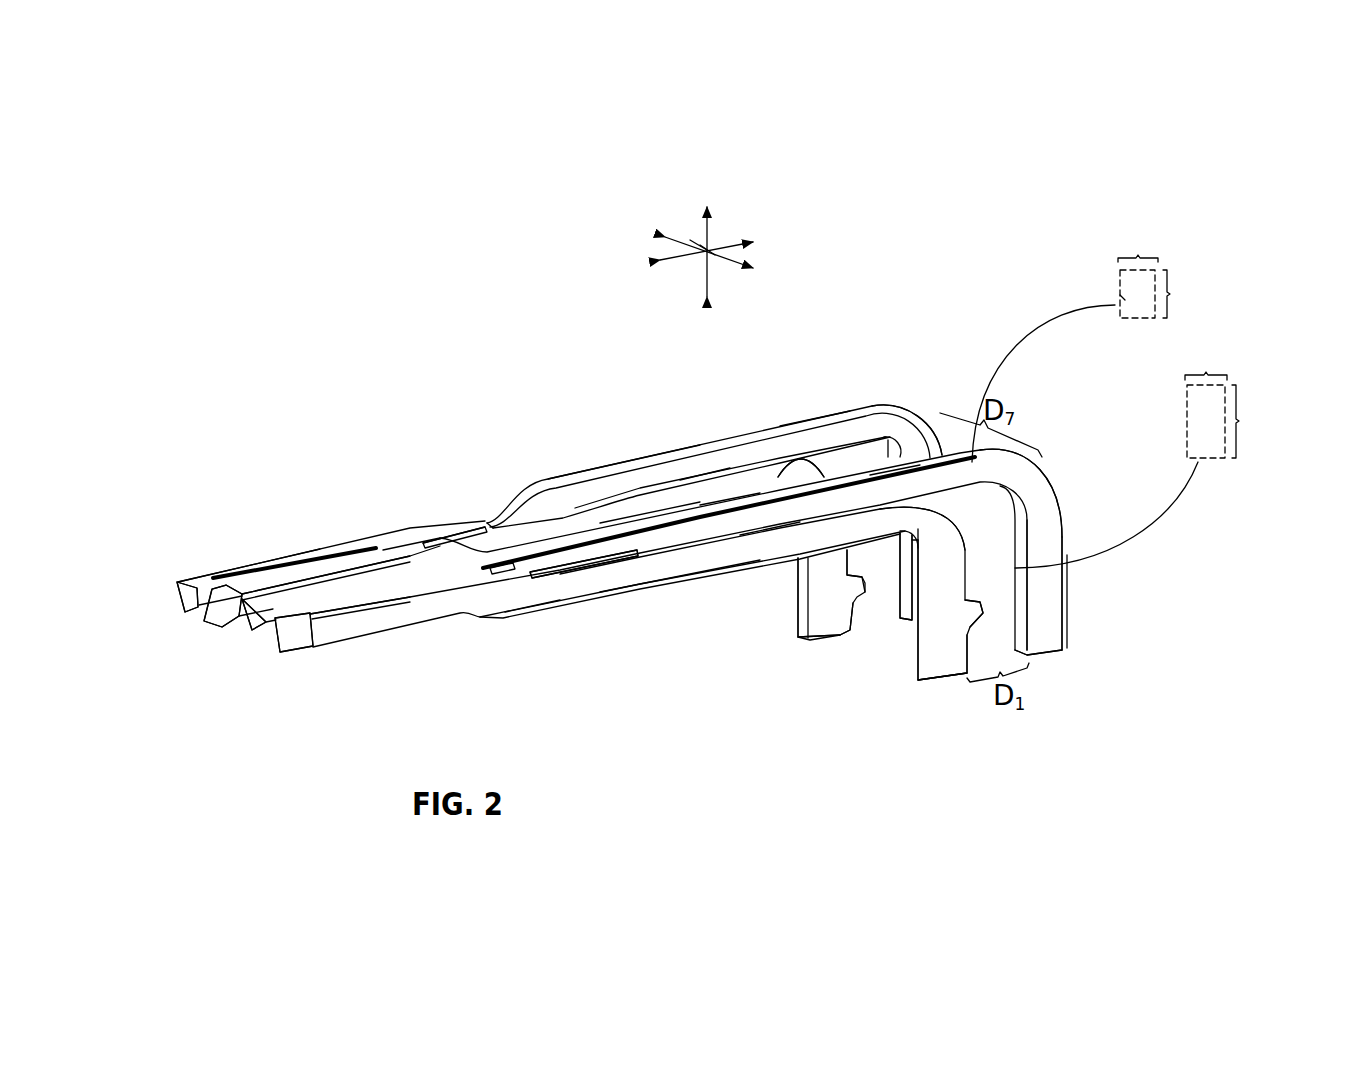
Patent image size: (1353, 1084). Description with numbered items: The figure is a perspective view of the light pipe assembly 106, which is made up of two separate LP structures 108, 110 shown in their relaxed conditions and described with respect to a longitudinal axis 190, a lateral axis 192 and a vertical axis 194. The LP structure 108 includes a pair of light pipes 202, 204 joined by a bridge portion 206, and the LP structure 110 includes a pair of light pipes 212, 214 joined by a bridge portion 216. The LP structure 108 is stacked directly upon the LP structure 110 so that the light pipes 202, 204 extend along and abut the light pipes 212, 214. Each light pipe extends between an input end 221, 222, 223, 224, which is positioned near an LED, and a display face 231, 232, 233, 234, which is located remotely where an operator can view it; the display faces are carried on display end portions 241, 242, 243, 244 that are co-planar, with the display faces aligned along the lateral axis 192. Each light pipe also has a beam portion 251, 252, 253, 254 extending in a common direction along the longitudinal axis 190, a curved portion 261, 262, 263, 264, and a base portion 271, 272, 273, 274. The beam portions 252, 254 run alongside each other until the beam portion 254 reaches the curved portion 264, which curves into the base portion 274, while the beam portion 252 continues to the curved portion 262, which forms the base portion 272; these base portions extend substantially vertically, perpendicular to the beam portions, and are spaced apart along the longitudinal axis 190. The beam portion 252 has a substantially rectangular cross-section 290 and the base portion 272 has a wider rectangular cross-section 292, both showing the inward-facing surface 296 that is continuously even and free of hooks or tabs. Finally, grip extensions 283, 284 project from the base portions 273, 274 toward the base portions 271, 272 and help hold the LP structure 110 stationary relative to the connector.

The LP assembly 106 is at (240, 472).
The LP structure 108 is at (462, 502).
The LP structure 110 is at (520, 628).
The longitudinal axis 190 is at (722, 243).
The lateral axis 192 is at (725, 262).
The vertical axis 194 is at (700, 228).
The light pipe 202 is at (612, 460).
The light pipe 204 is at (648, 520).
The bridge portion 206 is at (487, 525).
The light pipe 212 is at (723, 493).
The light pipe 214 is at (707, 573).
The bridge portion 216 is at (527, 572).
The input end 221 is at (907, 612).
The input end 222 is at (1043, 655).
The input end 223 is at (810, 640).
The input end 224 is at (940, 683).
The display face 231 is at (212, 623).
The display face 232 is at (253, 633).
The display face 233 is at (177, 602).
The display face 234 is at (280, 637).
The display end portion 241 is at (277, 578).
The display end portion 242 is at (355, 583).
The display end portion 243 is at (245, 567).
The display end portion 244 is at (370, 617).
The beam portion 251 is at (817, 410).
The beam portion 252 is at (887, 473).
The beam portion 253 is at (702, 495).
The beam portion 254 is at (777, 550).
The curved portion 261 is at (910, 413).
The curved portion 262 is at (1040, 472).
The curved portion 263 is at (823, 476).
The curved portion 264 is at (927, 520).
The base portion 271 is at (902, 573).
The base portion 272 is at (1050, 595).
The base portion 273 is at (830, 572).
The base portion 274 is at (947, 590).
The grip extension 283 is at (840, 633).
The grip extension 284 is at (983, 612).
The cross-section 290 is at (1172, 262).
The cross-section 292 is at (1240, 380).
The inward-facing surface 296 is at (1115, 293).